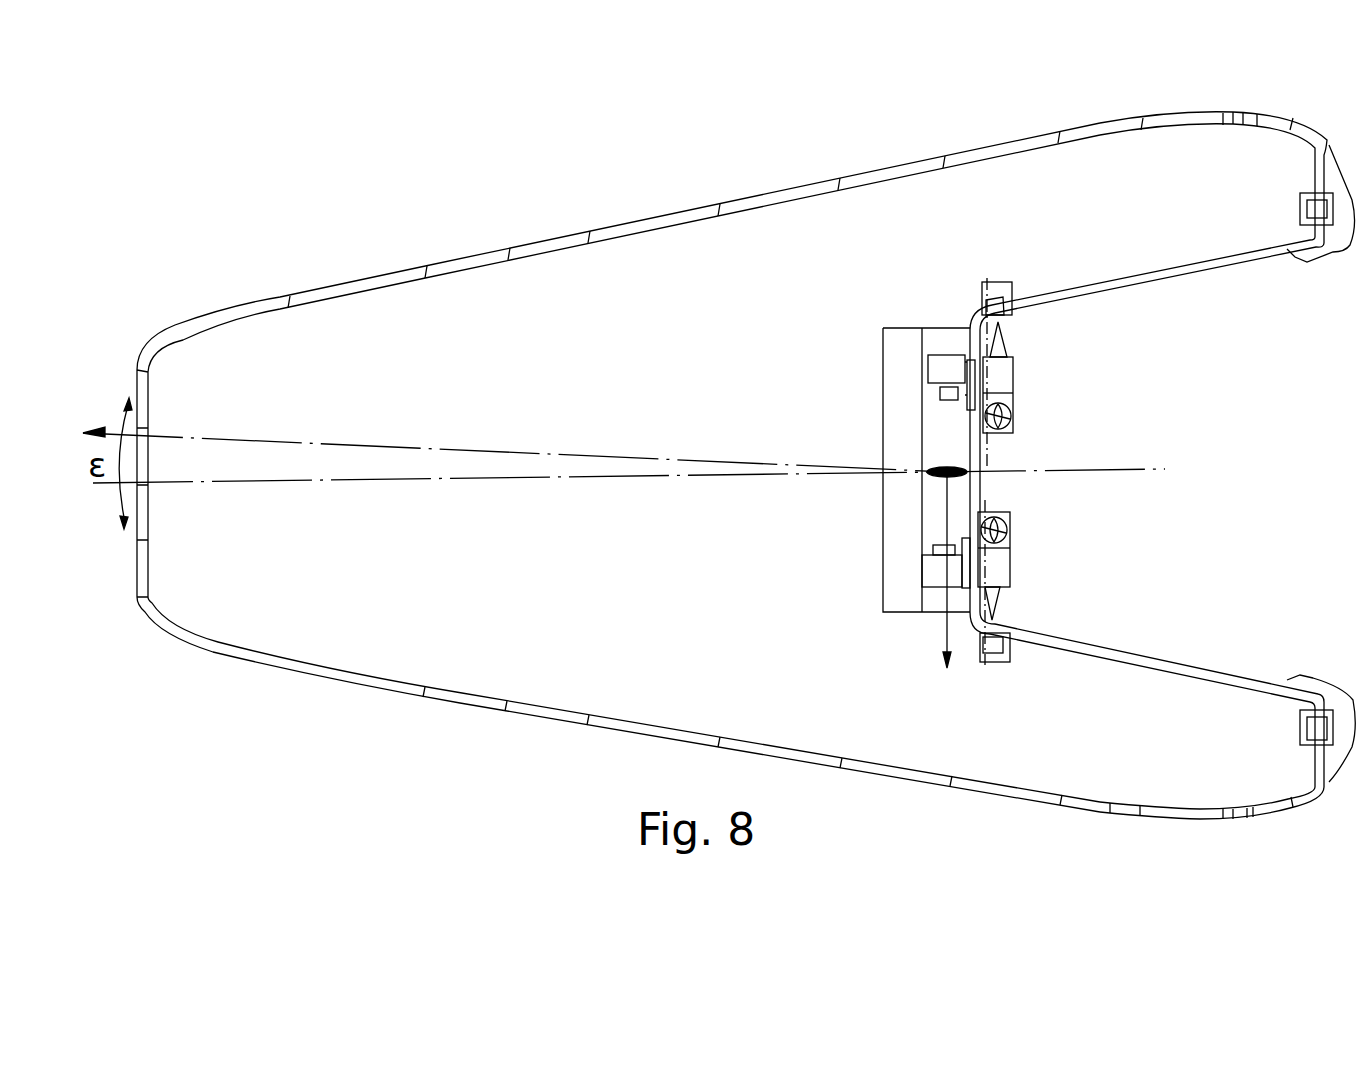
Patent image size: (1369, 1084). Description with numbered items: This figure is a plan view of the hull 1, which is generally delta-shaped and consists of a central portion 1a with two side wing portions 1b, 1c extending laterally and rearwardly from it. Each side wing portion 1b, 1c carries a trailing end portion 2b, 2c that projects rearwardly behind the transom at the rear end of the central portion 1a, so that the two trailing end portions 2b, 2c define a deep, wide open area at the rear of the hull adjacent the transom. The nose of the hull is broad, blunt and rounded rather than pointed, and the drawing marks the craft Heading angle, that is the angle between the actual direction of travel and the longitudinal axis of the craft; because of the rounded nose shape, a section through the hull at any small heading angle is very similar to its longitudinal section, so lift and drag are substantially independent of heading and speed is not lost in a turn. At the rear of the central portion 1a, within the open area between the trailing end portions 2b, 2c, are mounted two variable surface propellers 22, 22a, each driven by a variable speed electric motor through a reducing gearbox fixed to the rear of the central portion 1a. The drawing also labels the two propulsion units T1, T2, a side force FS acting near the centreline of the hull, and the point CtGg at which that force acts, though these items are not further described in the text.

The hull 1 is at (383, 733).
The central portion 1a is at (328, 315).
The side wing portion 1b is at (773, 200).
The side wing portion 1c is at (632, 735).
The trailing end portion 2b is at (1158, 157).
The trailing end portion 2c is at (1217, 783).
The variable surface propeller 22 is at (1010, 366).
The variable surface propeller 22a is at (1000, 577).
The first thruster T1 is at (1030, 388).
The second thruster T2 is at (1028, 555).
The side force FS is at (932, 582).
The center of thrust / center of gravity CtGg is at (975, 463).
The craft heading Heading is at (96, 455).